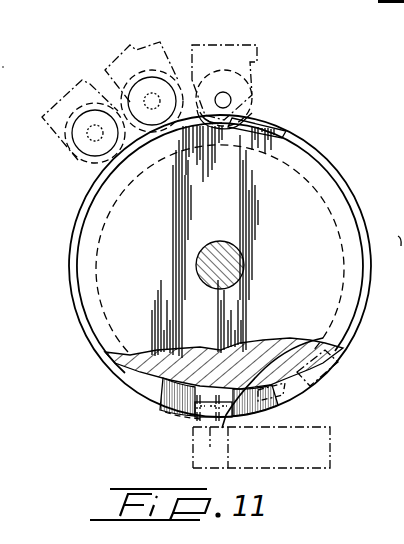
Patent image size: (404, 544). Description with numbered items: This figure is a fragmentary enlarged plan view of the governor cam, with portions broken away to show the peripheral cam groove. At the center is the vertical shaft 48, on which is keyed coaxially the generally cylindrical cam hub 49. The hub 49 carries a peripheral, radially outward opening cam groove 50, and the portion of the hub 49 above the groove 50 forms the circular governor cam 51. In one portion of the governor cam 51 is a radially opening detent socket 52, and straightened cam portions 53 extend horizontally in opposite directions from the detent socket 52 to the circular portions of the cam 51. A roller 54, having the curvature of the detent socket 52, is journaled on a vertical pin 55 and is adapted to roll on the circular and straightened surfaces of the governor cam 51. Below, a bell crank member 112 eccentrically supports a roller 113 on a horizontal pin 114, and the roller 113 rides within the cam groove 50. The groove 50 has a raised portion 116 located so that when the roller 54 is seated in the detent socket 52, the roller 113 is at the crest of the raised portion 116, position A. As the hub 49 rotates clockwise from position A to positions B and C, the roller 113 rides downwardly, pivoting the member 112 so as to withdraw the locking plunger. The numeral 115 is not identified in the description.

The vertical shaft 48 is at (238, 263).
The cam hub 49 is at (343, 193).
The cam groove 50 is at (102, 362).
The governor cam 51 is at (70, 262).
The detent socket 52 is at (250, 115).
The straightened cam portions 53 is at (278, 129).
The roller 54 is at (75, 170).
The vertical pin 55 is at (90, 136).
The bell crank member 112 is at (317, 450).
The roller 113 is at (173, 427).
The horizontal pin 114 is at (158, 402).
The mounting post 115 is at (188, 447).
The raised portion 116 is at (256, 360).